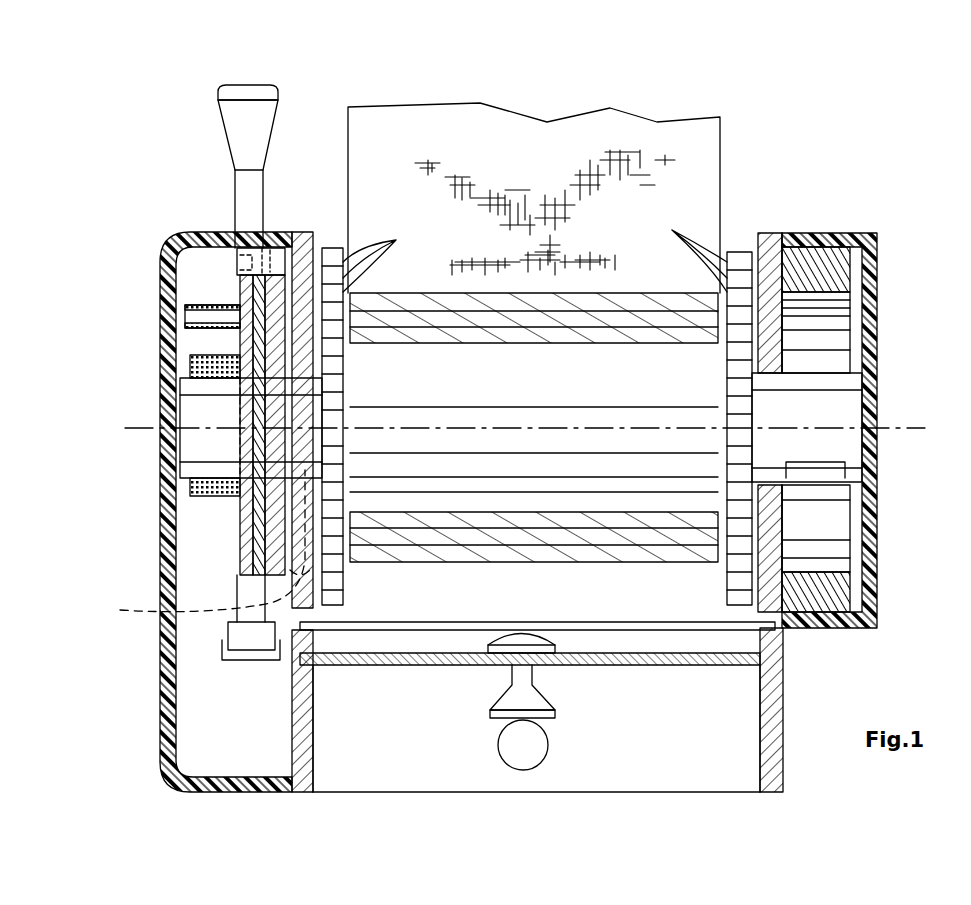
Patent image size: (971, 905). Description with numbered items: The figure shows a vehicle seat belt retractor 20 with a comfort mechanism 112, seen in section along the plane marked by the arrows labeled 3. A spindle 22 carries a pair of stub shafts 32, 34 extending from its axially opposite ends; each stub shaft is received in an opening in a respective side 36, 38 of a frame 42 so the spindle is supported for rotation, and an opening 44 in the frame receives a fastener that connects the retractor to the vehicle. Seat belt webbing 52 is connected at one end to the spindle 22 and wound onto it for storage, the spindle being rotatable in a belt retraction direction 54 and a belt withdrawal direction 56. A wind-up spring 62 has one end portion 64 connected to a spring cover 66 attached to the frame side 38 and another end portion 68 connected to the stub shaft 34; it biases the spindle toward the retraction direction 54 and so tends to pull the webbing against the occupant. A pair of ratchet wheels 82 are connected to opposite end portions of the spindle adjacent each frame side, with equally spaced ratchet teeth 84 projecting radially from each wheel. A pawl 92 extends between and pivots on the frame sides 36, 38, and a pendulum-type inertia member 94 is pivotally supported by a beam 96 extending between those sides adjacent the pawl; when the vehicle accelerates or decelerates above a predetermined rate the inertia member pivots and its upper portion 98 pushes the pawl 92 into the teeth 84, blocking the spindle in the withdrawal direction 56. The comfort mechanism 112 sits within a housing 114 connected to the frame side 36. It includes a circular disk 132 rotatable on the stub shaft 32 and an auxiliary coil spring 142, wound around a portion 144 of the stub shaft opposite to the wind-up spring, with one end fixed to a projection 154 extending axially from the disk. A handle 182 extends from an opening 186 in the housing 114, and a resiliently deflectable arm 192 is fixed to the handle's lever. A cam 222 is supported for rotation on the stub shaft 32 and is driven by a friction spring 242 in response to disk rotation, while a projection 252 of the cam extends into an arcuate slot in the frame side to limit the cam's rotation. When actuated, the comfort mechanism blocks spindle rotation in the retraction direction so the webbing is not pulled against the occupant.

The section line 3- 3 is at (186, 128).
The seat belt retractor 20 is at (815, 192).
The spindle 22 is at (620, 392).
The stub shaft 32 is at (270, 400).
The stub shaft 34 is at (835, 395).
The frame side 36 is at (302, 770).
The frame side 38 is at (775, 775).
The frame 42 is at (648, 775).
The opening 44 is at (520, 770).
The seat belt webbing 52 is at (440, 138).
The belt retraction direction 54 is at (353, 505).
The belt withdrawal direction 56 is at (353, 345).
The wind-up spring 62 is at (818, 355).
The end portion 64 is at (848, 238).
The spring cover 66 is at (878, 262).
The end portion 68 is at (830, 462).
The ratchet wheel 82 is at (332, 245).
The ratchet teeth 84 is at (535, 251).
The pawl 92 is at (600, 622).
The inertia member 94 is at (503, 700).
The beam 96 is at (640, 668).
The upper portion 98 is at (525, 642).
The comfort mechanism 112 is at (212, 262).
The housing 114 is at (170, 298).
The circular disk 132 is at (250, 560).
The auxiliary coil spring 142 is at (195, 365).
The portion of the stub shaft 144 is at (220, 448).
The projection 154 is at (200, 312).
The handle 182 is at (262, 122).
The opening 186 is at (258, 245).
The resiliently deflectable arm 192 is at (240, 280).
The cam 222 is at (270, 498).
The friction spring 242 is at (262, 527).
The projection 252 is at (193, 547).